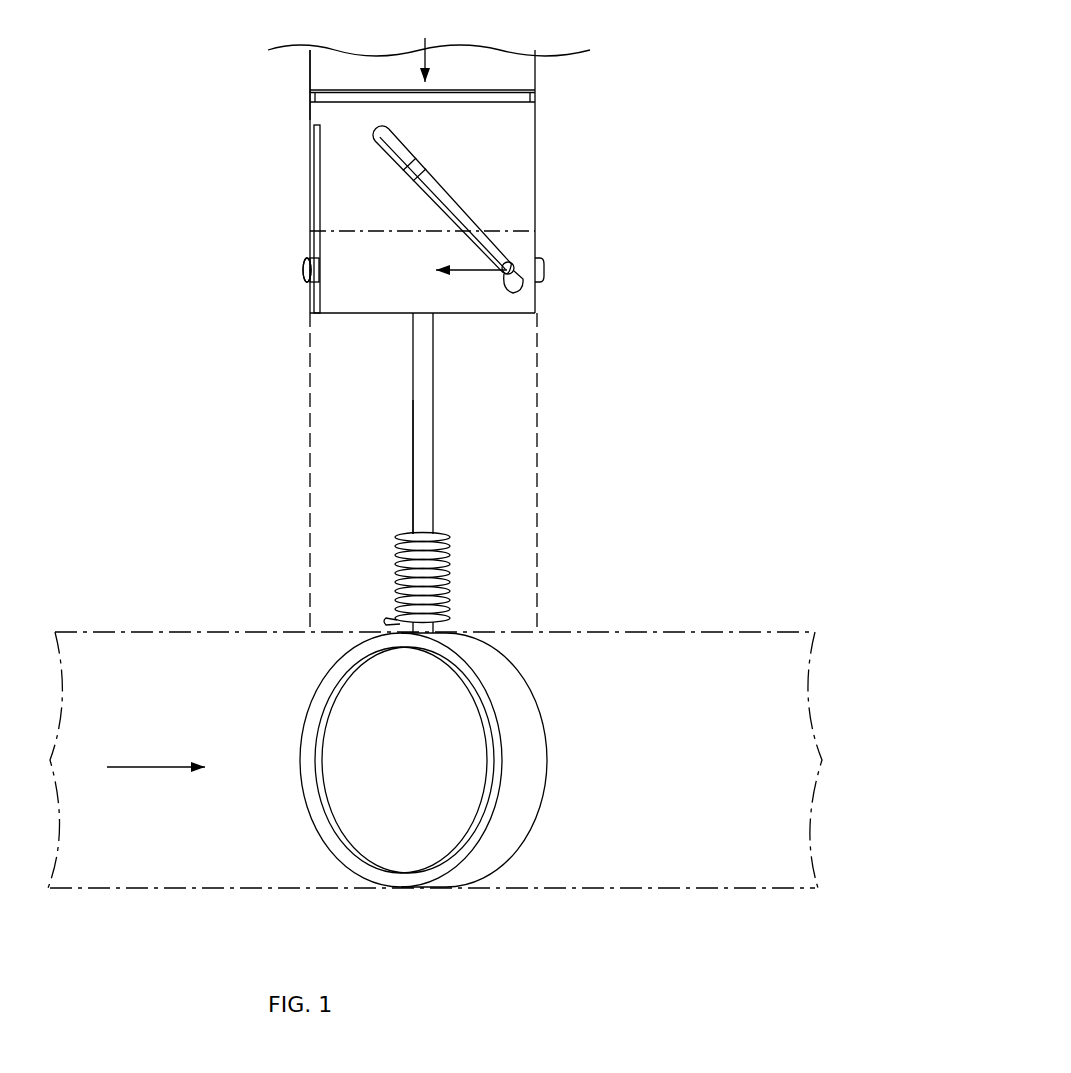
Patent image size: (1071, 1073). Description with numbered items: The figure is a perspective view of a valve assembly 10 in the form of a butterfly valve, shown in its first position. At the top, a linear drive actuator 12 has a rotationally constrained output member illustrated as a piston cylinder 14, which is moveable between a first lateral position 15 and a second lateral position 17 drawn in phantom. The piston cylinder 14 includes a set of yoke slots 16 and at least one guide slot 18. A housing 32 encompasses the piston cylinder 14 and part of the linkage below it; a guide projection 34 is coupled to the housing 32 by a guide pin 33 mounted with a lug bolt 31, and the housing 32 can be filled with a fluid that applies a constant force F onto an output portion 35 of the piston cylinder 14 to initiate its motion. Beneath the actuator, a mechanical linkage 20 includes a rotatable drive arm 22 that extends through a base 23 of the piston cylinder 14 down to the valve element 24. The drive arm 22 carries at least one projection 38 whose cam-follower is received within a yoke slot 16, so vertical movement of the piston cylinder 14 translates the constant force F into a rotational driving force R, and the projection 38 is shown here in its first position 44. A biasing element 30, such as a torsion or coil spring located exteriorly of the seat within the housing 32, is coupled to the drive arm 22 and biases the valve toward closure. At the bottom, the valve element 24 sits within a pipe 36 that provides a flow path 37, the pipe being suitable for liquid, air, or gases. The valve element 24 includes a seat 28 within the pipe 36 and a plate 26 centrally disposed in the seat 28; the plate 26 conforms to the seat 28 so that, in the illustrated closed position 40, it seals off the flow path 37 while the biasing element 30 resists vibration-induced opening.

The valve assembly 10 is at (707, 108).
The linear drive actuator 12 is at (322, 72).
The piston cylinder 14 is at (518, 160).
The first lateral position 15 is at (528, 90).
The yoke slots 16 is at (428, 168).
The second lateral position 17 is at (356, 231).
The guide slot 18 is at (318, 168).
The mechanical linkage 20 is at (411, 470).
The rotatable drive arm 22 is at (434, 497).
The base 23 is at (472, 320).
The valve element 24 is at (312, 684).
The plate 26 is at (433, 756).
The seat 28 is at (520, 732).
The biasing element 30 is at (449, 572).
The lug bolt 31 is at (311, 282).
The housing 32 is at (537, 524).
The guide pin 33 is at (316, 258).
The guide projection 34 is at (303, 268).
The output portion 35 is at (528, 97).
The pipe 36 is at (190, 645).
The flow path 37 is at (152, 770).
The projection 38 is at (510, 292).
The closed position 40 is at (424, 840).
The first position 44 is at (516, 279).
The constant force F is at (430, 52).
The rotational driving force R is at (470, 272).